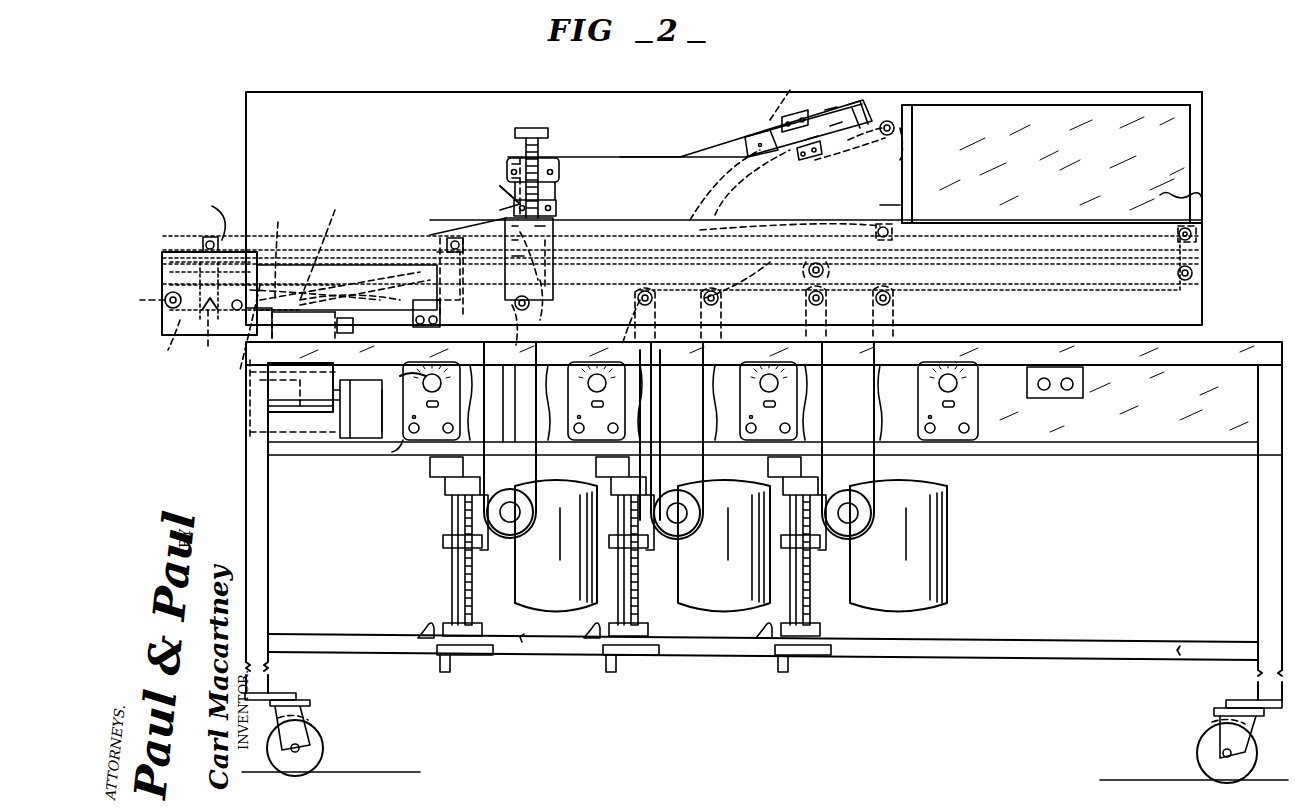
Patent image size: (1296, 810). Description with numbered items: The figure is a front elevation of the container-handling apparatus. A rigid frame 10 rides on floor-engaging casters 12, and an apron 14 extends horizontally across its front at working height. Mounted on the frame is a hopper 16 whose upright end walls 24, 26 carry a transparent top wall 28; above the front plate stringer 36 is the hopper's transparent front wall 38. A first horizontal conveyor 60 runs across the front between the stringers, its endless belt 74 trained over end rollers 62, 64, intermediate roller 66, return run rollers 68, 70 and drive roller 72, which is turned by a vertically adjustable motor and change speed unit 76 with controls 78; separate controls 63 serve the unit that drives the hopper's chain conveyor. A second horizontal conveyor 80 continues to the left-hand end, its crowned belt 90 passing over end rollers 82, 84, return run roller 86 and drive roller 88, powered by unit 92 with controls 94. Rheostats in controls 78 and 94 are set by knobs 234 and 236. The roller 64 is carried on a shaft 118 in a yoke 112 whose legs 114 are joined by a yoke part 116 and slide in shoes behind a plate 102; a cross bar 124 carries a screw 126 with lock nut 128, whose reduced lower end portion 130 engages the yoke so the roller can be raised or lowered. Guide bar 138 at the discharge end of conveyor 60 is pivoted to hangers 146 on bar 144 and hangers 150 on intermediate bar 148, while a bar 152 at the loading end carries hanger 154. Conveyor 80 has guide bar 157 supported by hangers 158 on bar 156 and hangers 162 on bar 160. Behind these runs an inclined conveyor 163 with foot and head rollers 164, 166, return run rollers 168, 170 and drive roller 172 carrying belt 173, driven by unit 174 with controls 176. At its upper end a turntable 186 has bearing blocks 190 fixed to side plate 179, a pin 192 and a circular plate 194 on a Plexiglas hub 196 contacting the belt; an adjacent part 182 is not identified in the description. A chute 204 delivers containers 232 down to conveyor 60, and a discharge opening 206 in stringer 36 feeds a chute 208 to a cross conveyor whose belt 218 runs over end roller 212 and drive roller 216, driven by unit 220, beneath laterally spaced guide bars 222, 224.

The frame 10 is at (1232, 520).
The casters 12 is at (322, 734).
The apron 14 is at (1222, 358).
The hopper 16 is at (1078, 116).
The upright end wall 24 is at (877, 198).
The upright end wall 26 is at (1202, 174).
The top wall 28 is at (1016, 90).
The plate stringer 36 is at (1028, 225).
The front wall of the hopper 38 is at (1202, 198).
The first horizontal conveyor 60 is at (971, 274).
The end roller 62 is at (1176, 273).
The controls 63 is at (976, 413).
The end roller 64 is at (556, 262).
The intermediate roller 66 is at (824, 270).
The return run roller 68 is at (808, 300).
The return run roller 70 is at (892, 300).
The drive roller 72 is at (860, 490).
The endless belt 74 is at (1052, 288).
The electric motor and change speed unit 76 is at (898, 546).
The controls 78 is at (752, 444).
The second horizontal conveyor 80 is at (200, 333).
The end roller 82 is at (511, 391).
The end roller 84 is at (154, 342).
The return run roller 86 is at (431, 390).
The drive roller 88 is at (510, 500).
The endless belt 90 is at (522, 390).
The electric motor and change speed unit 92 is at (556, 546).
The controls 94 is at (406, 446).
The plate 102 is at (556, 244).
The yoke 112 is at (555, 208).
The yoke legs 114 is at (552, 192).
The yoke part 116 is at (518, 210).
The shaft 118 is at (548, 290).
The cross bar 124 is at (556, 174).
The screw 126 is at (548, 146).
The lock nut 128 is at (552, 158).
The lower end portion of screw 130 is at (508, 196).
The guide bar 138 is at (738, 240).
The bar 144 is at (480, 220).
The hangers 146 is at (462, 244).
The bar 148 is at (884, 228).
The hangers 150 is at (878, 226).
The bar 152 is at (1178, 235).
The hanger 154 is at (1198, 234).
The bar 156 is at (438, 243).
The guide bar 157 is at (170, 250).
The hangers 158 is at (450, 236).
The bar 160 is at (204, 238).
The hangers 162 is at (194, 218).
The inclined conveyor 163 is at (673, 181).
The foot roller 164 is at (268, 343).
The head roller 166 is at (816, 160).
The return run roller 168 is at (746, 301).
The return run roller 170 is at (642, 390).
The drive roller 172 is at (676, 500).
The endless belt 173 is at (670, 435).
The electric motor and change speed unit 174 is at (724, 546).
The controls 176 is at (538, 440).
The side plate 179 is at (884, 96).
The end cap 182 is at (866, 100).
The turntable 186 is at (763, 119).
The bearing blocks 190 is at (832, 104).
The pin 192 is at (792, 110).
The circular plate 194 is at (812, 160).
The hub 196 is at (778, 118).
The chute 204 is at (657, 301).
The discharge opening 206 is at (392, 266).
The chute 208 is at (340, 282).
The end roller 212 is at (316, 352).
The drive roller 216 is at (292, 406).
The endless belt 218 is at (286, 396).
The electric motor and change speed unit 220 is at (362, 436).
The guide bar 222 is at (333, 242).
The guide bar 224 is at (283, 252).
The containers 232 is at (292, 198).
The knob 234 is at (810, 390).
The knob 236 is at (408, 378).